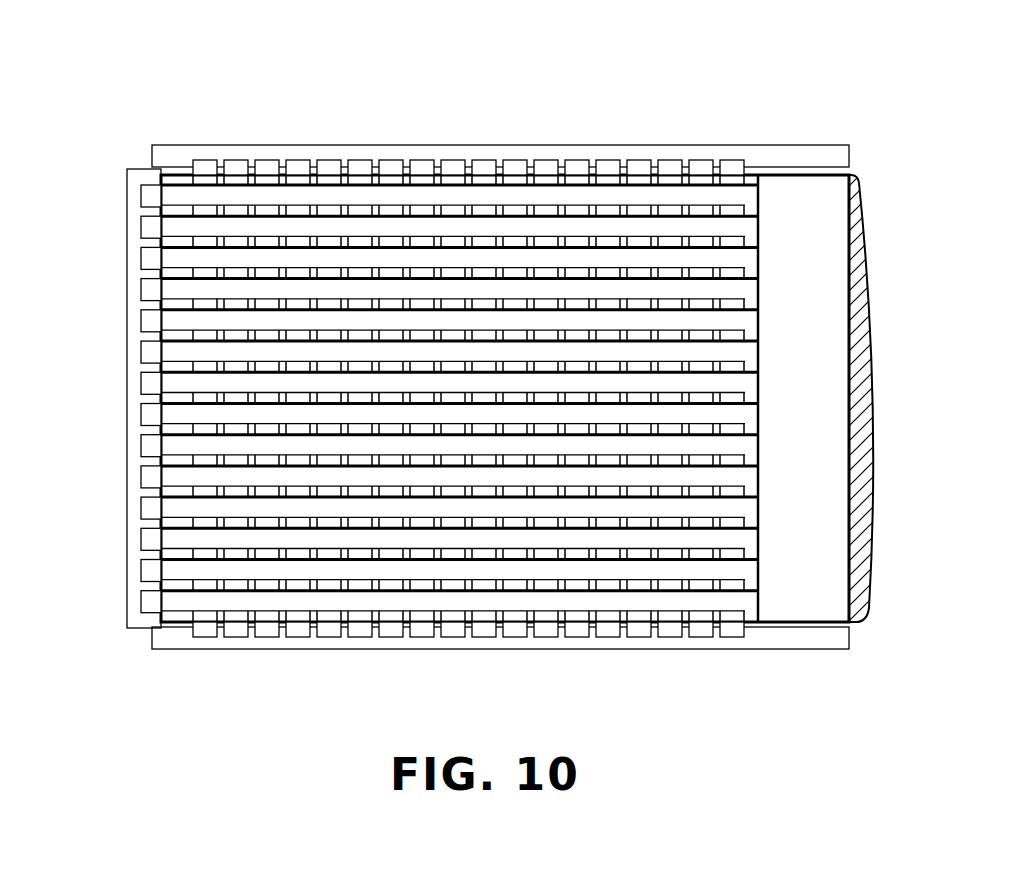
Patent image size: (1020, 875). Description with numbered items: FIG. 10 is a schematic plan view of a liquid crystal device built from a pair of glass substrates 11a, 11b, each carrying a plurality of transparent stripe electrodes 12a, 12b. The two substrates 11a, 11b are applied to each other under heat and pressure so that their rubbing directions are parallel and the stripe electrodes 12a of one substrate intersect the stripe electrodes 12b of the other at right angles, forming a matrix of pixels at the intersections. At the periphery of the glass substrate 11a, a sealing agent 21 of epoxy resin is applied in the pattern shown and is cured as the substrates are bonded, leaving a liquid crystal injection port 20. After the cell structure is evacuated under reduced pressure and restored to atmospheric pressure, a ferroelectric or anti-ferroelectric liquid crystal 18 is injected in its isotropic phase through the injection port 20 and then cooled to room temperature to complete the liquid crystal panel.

The substrate 11a is at (127, 195).
The substrate 11b is at (190, 146).
The stripe electrodes 12a is at (142, 227).
The stripe electrodes 12b is at (330, 160).
The liquid crystal 18 is at (873, 290).
The liquid crystal injection port 20 is at (838, 211).
The sealing agent 21 is at (177, 630).